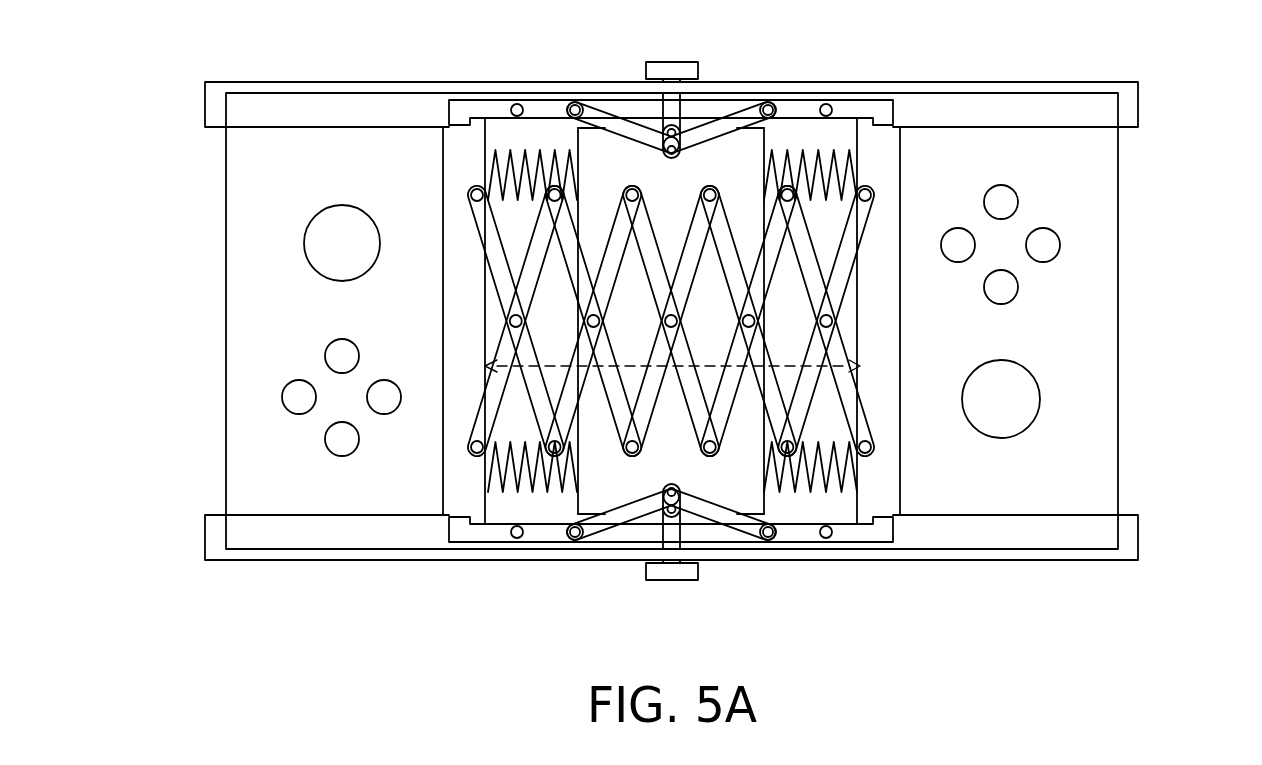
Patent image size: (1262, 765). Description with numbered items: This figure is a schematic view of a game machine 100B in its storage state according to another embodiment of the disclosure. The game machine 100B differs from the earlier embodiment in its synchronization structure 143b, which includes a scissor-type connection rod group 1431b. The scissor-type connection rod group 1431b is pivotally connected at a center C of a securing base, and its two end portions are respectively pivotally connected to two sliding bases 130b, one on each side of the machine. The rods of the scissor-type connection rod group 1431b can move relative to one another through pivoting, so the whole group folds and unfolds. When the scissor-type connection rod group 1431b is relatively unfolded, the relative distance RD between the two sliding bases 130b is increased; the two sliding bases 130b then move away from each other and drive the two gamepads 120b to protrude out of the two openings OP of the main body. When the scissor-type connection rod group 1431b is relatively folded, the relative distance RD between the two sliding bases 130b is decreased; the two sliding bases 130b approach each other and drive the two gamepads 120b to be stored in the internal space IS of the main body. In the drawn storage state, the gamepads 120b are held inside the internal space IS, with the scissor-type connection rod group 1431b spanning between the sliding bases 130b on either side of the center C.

The game machine 100B is at (1261, 682).
The gamepad 120b is at (293, 480).
The sliding base 130b is at (467, 152).
The scissor-type connection rod group 1431b is at (640, 420).
The synchronization structure 143b is at (671, 360).
The internal space IS is at (539, 137).
The opening OP is at (207, 178).
The center C is at (673, 312).
The relative distance RD is at (757, 400).